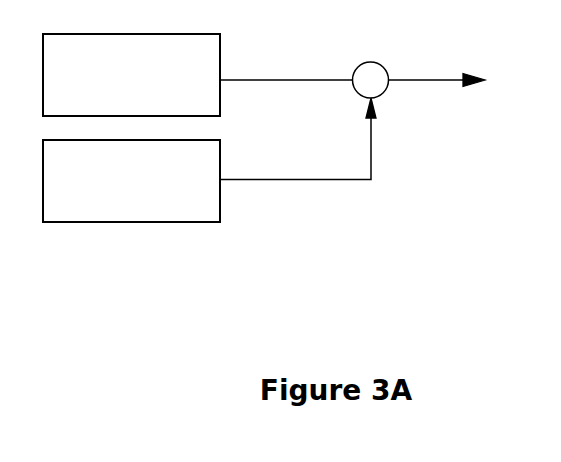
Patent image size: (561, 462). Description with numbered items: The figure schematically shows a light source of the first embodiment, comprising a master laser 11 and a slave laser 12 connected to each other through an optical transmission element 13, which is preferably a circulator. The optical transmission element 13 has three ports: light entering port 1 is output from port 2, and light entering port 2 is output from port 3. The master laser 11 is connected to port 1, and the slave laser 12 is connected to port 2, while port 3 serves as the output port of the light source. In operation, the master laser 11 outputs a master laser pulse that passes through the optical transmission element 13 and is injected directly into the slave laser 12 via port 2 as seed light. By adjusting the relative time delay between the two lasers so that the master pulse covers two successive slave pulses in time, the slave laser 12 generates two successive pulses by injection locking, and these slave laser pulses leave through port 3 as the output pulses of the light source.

The slave laser 12 is at (131, 75).
The master laser 11 is at (131, 181).
The optical transmission element 13 is at (371, 80).
The port 1 is at (298, 139).
The port 2 is at (286, 66).
The port 3 is at (437, 70).